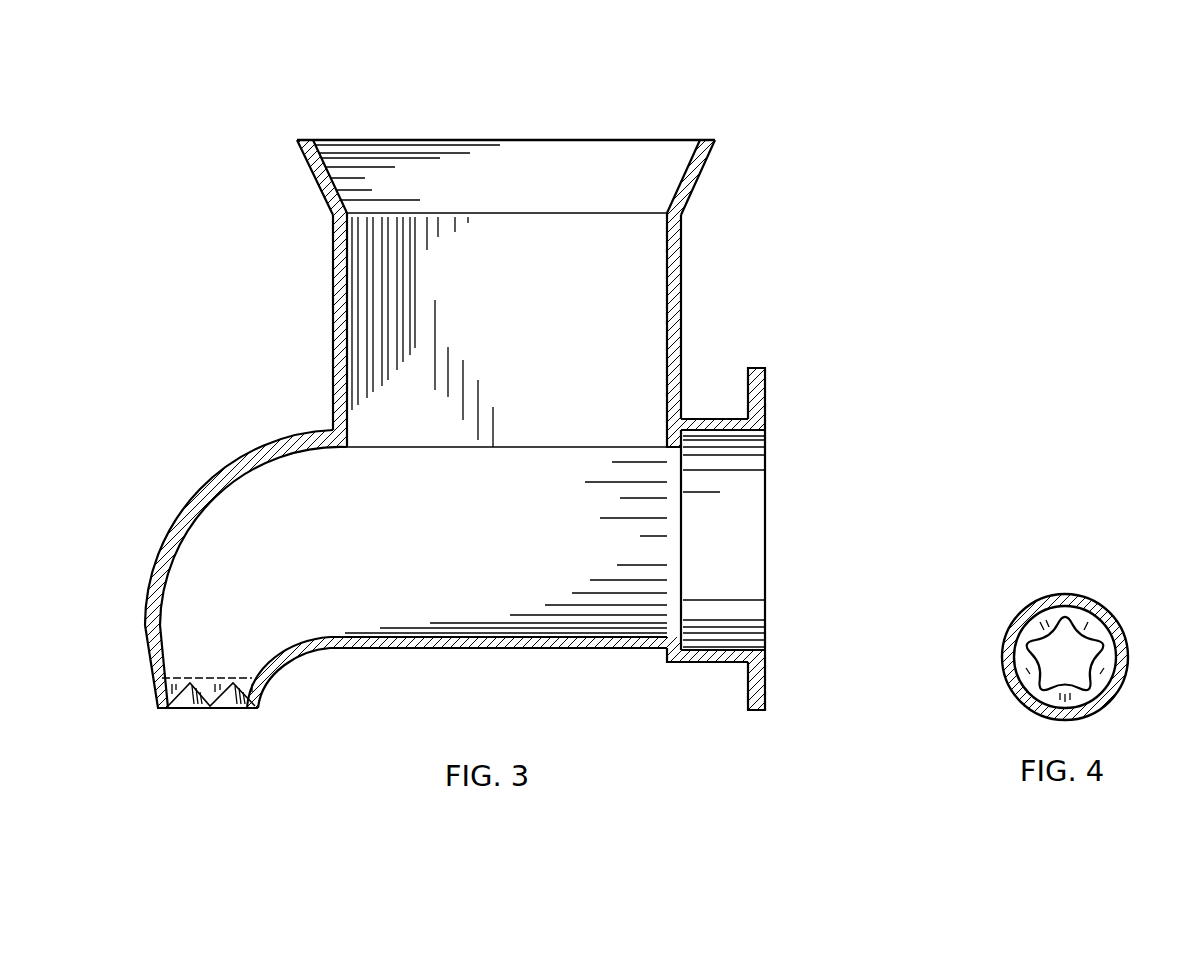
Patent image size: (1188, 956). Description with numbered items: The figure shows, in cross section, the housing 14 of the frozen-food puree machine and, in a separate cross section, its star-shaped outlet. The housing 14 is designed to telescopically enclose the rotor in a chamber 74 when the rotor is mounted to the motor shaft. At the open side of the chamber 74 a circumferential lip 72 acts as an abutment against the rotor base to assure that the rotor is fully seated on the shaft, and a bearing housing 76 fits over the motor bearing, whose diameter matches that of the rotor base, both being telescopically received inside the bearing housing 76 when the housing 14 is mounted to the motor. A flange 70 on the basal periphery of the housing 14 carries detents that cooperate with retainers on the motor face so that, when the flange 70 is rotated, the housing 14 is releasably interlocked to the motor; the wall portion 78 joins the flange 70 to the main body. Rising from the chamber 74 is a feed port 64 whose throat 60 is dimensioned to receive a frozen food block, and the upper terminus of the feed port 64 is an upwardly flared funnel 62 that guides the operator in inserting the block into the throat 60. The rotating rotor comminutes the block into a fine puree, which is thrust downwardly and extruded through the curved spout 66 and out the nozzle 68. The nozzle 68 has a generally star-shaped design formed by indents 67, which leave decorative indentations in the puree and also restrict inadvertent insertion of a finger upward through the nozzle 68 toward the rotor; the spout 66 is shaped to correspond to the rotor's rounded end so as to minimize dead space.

In FIG. 3, the housing 14 is at (745, 298).
In FIG. 3, the throat 60 is at (668, 272).
In FIG. 3, the upwardly flared funnel 62 is at (683, 180).
In FIG. 3, the feed port 64 is at (333, 290).
In FIG. 3, the spout 66 is at (148, 590).
In FIG. 3, the indents 67 is at (190, 709).
In FIG. 4, the indents 67 is at (1018, 645).
In FIG. 3, the nozzle 68 is at (212, 709).
In FIG. 4, the nozzle 68 is at (1095, 630).
In FIG. 3, the flange 70 is at (767, 392).
In FIG. 3, the circumferential lip 72 is at (683, 433).
In FIG. 3, the chamber 74 is at (430, 637).
In FIG. 3, the bearing housing 76 is at (725, 650).
In FIG. 3, the upper flange web 78 is at (721, 419).